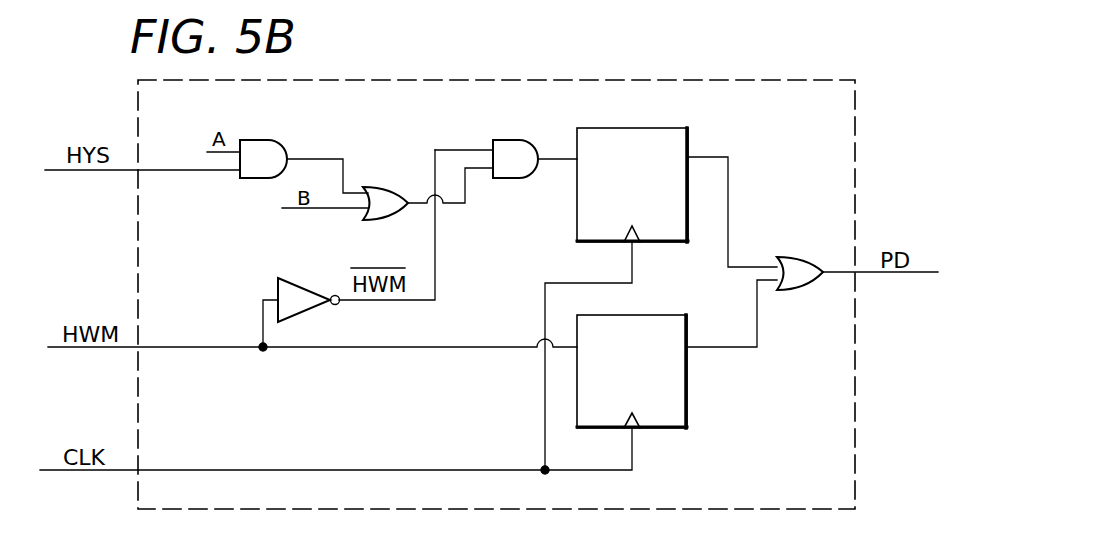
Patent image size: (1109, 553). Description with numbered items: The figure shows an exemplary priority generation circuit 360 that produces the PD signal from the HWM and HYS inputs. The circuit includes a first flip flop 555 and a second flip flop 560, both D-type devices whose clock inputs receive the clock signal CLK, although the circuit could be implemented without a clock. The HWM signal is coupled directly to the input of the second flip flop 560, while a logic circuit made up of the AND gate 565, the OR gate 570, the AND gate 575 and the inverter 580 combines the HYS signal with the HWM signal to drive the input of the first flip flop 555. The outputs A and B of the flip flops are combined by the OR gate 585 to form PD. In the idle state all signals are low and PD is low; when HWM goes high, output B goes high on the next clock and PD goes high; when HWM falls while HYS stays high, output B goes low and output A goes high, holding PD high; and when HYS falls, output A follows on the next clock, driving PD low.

The priority generation circuit 360 is at (713, 78).
The first flip flop 555 is at (660, 205).
The second flip flop 560 is at (657, 393).
The AND gate 565 is at (263, 143).
The OR gate 570 is at (380, 188).
The AND gate 575 is at (518, 143).
The inverter 580 is at (300, 292).
The OR gate 585 is at (793, 282).